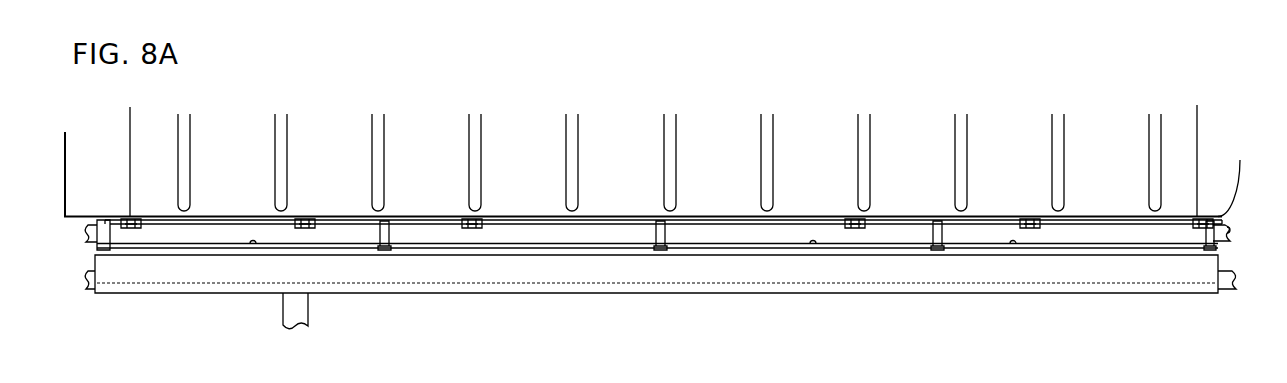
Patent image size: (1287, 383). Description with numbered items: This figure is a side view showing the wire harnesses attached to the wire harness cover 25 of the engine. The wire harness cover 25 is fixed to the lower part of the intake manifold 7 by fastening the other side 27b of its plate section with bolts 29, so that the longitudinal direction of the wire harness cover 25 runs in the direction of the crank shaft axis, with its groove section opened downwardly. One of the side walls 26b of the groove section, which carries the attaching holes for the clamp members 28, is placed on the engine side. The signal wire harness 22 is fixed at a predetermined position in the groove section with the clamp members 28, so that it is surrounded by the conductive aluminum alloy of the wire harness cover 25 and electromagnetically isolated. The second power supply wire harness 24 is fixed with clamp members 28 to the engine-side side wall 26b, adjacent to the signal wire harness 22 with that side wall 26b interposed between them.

The intake manifold 7 is at (1182, 149).
The other side of the plate section 27b is at (728, 240).
The bolts 29 is at (129, 218).
The clamp members 28 is at (384, 254).
The wire harness cover 25 is at (716, 328).
The side walls of the groove section 26b is at (756, 294).
The second power supply wire harness 24 is at (1236, 238).
The signal wire harness 22 is at (1238, 286).